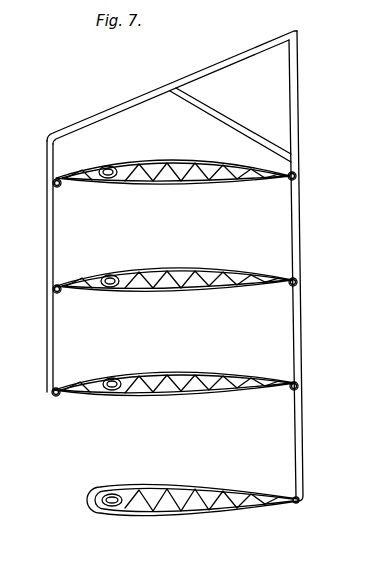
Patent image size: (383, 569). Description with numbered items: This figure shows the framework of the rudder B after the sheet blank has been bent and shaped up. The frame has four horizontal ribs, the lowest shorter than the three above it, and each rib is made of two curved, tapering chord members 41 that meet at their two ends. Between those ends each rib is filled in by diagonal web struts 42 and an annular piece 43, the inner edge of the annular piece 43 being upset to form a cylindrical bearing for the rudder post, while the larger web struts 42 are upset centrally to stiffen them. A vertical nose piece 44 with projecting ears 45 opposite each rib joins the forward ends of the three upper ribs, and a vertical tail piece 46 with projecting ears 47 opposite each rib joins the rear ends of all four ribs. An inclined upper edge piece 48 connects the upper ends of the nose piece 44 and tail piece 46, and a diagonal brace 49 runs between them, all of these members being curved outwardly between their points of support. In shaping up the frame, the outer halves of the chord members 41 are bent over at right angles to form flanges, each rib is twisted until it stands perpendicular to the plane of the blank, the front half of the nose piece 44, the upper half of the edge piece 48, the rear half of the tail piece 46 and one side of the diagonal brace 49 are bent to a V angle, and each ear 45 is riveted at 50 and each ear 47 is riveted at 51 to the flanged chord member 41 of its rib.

The rudder B is at (176, 266).
The chord members 41 is at (221, 167).
The diagonal web struts 42 is at (206, 177).
The annular piece 43 is at (110, 164).
The vertical nose piece 44 is at (48, 246).
The projecting ears 45 is at (53, 181).
The vertical tail piece 46 is at (300, 233).
The projecting ears 47 is at (298, 176).
The inclined upper edge piece 48 is at (156, 92).
The diagonal brace 49 is at (238, 129).
The rivet 50 is at (58, 187).
The rivet 51 is at (296, 168).